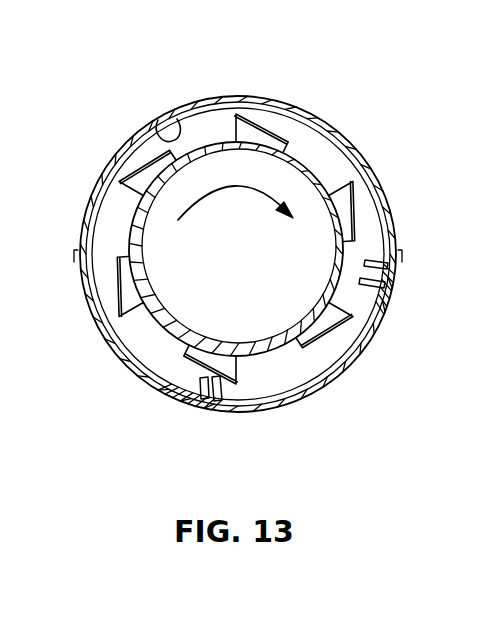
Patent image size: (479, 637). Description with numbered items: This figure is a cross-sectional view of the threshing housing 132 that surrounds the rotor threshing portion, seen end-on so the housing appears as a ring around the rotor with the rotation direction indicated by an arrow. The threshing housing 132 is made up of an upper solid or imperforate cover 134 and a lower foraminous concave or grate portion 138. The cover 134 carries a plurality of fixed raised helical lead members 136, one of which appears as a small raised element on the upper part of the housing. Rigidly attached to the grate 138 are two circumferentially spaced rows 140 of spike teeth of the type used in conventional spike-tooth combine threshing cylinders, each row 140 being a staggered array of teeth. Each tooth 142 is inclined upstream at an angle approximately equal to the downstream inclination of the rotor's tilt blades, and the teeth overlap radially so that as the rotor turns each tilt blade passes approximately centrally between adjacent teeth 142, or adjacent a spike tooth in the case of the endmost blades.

The threshing housing 132 is at (206, 88).
The upper solid cover 134 is at (295, 110).
The helical lead member 136 is at (159, 119).
The grate portion 138 is at (301, 405).
The row of spike teeth 140 is at (399, 274).
The spike tooth 142 is at (388, 293).